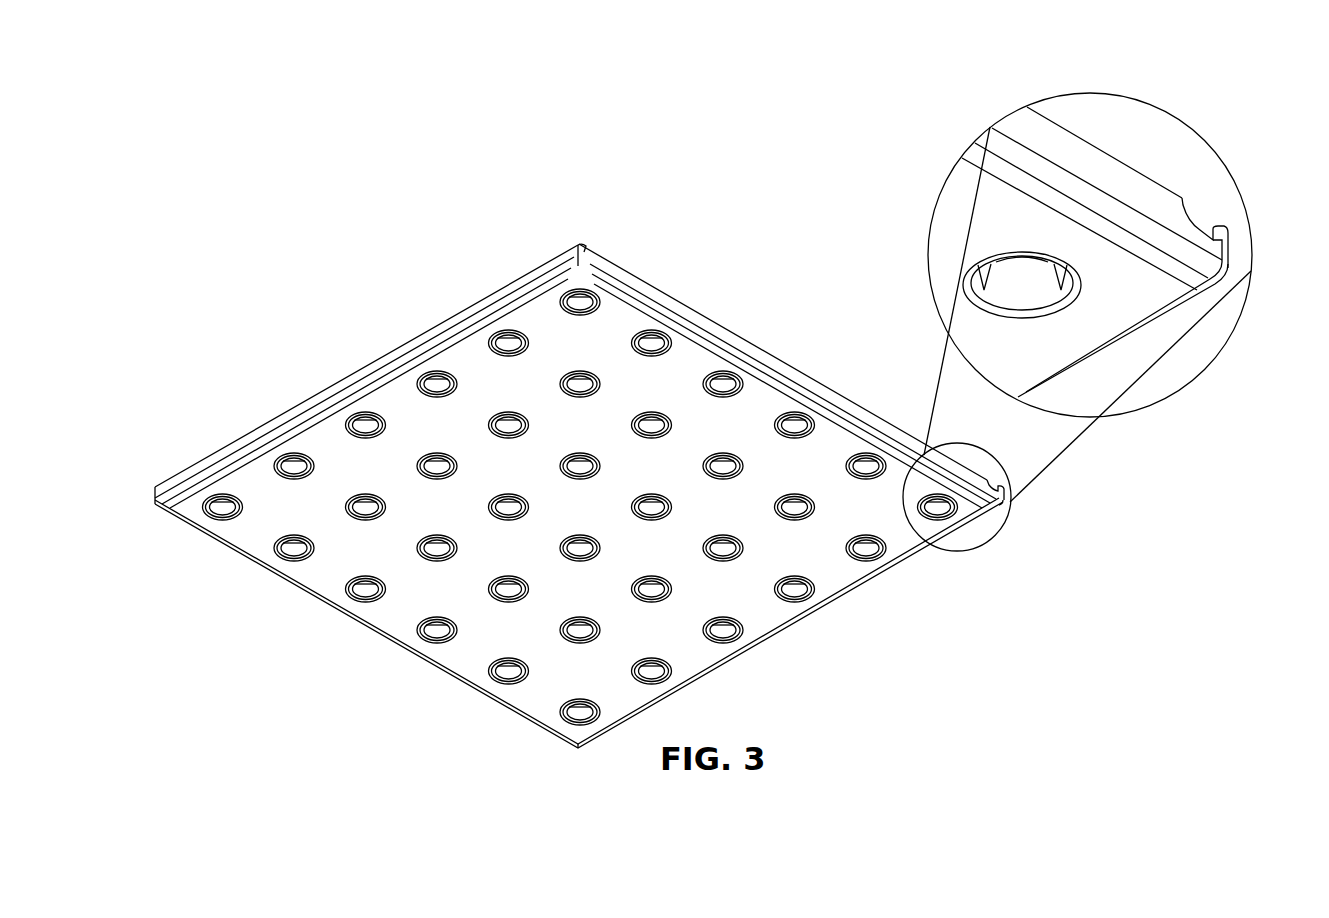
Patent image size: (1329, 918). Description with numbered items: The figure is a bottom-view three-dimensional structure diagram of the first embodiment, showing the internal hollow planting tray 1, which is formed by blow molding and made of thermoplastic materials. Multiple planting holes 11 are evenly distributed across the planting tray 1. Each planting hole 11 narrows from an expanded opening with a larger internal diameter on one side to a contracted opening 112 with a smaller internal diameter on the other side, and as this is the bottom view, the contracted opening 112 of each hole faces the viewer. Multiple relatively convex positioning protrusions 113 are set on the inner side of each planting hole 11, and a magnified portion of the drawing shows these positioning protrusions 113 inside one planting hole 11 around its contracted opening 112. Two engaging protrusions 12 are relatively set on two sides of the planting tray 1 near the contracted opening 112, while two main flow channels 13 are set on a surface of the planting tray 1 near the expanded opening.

The planting tray 1 is at (398, 615).
The planting hole 11 is at (508, 680).
The contracted opening 112 is at (1043, 293).
The positioning protrusion 113 is at (1017, 247).
The engaging protrusion 12 is at (375, 362).
The main flow channel 13 is at (590, 248).